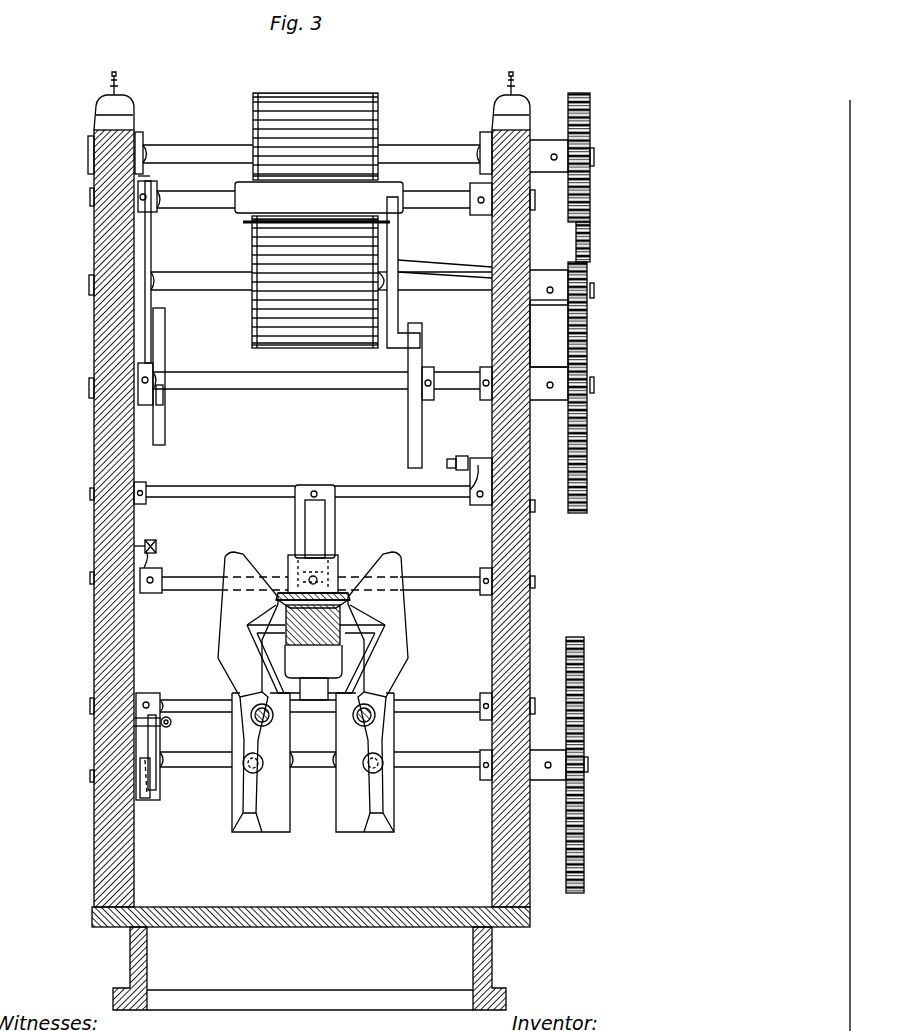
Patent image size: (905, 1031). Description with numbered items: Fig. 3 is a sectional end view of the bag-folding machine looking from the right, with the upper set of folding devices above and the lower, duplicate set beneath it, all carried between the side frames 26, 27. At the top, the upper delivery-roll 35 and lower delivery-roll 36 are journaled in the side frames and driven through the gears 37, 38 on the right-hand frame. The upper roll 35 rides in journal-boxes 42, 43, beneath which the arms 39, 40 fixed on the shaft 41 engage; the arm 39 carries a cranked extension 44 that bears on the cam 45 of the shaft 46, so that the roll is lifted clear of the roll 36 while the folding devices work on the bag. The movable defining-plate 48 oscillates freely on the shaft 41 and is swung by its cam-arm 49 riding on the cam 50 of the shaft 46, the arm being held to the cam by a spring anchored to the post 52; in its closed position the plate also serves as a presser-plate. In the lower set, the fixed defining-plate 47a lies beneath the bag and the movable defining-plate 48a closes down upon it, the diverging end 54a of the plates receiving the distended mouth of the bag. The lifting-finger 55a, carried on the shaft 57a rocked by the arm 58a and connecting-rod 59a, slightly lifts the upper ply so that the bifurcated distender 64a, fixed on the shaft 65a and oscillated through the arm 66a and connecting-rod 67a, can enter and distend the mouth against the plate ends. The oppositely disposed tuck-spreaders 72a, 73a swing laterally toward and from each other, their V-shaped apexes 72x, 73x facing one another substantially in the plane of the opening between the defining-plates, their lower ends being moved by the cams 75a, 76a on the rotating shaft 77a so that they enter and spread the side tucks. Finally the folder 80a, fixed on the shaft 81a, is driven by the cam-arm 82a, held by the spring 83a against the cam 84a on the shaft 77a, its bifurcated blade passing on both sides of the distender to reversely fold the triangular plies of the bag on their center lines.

The side frame 26 is at (100, 446).
The side frame 27 is at (512, 546).
The upper delivery-roll 35 is at (360, 125).
The lower delivery-roll 36 is at (270, 258).
The gear 37 is at (586, 180).
The gear 38 is at (586, 243).
The arm 39 is at (152, 184).
The arm 40 is at (478, 188).
The shaft 41 is at (225, 200).
The journal-box 42 is at (180, 128).
The journal-box 43 is at (482, 146).
The cranked extension 44 is at (143, 276).
The cam 45 is at (160, 345).
The shaft 46 is at (300, 392).
The fixed defining-plate 47a is at (345, 615).
The movable defining-plate 48 is at (319, 197).
The movable defining-plate 48a is at (276, 597).
The cam-arm 49 is at (400, 248).
The cam 50 is at (418, 368).
The post 52 is at (462, 272).
The diverging end of defining-plate 54a is at (290, 566).
The lifting-finger 55a is at (325, 582).
The shaft 57a is at (436, 578).
The arm 58a is at (142, 575).
The connecting-rod 59a is at (172, 538).
The distender 64a is at (336, 516).
The shaft 65a is at (262, 498).
The arm 66a is at (472, 480).
The connecting-rod 67a is at (466, 447).
The tuck-spreader 72a is at (236, 620).
The apex of tuck-spreader 72x is at (278, 598).
The tuck-spreader 73a is at (396, 612).
The apex of tuck-spreader 73x is at (350, 598).
The cam 75a is at (250, 792).
The cam 76a is at (378, 792).
The rotating shaft 77a is at (466, 772).
The folder 80a is at (352, 655).
The shaft 81a is at (438, 712).
The cam-arm 82a is at (178, 678).
The spring 83a is at (172, 724).
The cam 84a is at (146, 770).